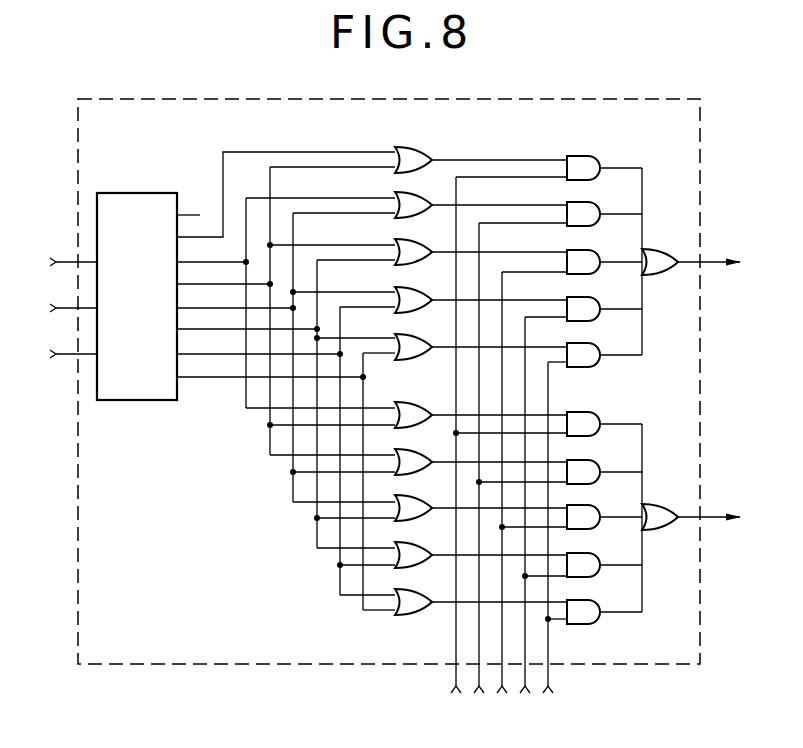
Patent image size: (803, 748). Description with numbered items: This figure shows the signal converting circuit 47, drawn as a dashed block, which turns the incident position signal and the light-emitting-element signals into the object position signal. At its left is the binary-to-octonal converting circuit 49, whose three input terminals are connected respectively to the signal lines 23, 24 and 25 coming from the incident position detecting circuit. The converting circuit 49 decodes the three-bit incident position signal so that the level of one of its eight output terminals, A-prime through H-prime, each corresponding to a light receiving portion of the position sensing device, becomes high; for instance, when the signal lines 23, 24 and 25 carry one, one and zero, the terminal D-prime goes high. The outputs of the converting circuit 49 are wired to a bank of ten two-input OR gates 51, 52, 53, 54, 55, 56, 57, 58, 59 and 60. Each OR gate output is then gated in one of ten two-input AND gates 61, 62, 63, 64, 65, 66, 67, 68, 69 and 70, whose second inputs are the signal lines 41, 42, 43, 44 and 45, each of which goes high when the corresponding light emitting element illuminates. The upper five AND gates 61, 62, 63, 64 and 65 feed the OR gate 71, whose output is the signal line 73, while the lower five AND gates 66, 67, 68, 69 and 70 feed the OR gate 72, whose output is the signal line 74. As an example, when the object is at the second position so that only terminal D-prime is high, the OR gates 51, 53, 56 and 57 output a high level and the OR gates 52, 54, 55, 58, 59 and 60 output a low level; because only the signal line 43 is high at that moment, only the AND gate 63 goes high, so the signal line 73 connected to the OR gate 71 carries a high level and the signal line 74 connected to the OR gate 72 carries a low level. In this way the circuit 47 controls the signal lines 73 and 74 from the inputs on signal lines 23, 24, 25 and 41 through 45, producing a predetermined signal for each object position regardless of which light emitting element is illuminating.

The signal converting circuit 47 is at (641, 99).
The binary-to-octonal converting circuit 49 is at (152, 193).
The signal line 23 is at (60, 355).
The signal line 24 is at (60, 309).
The signal line 25 is at (60, 263).
The signal line 41 is at (506, 451).
The signal line 42 is at (517, 474).
The signal line 43 is at (529, 499).
The signal line 44 is at (540, 521).
The signal line 45 is at (552, 544).
The 2-input OR gate 51 is at (420, 147).
The 2-input OR gate 52 is at (415, 193).
The 2-input OR gate 53 is at (415, 240).
The 2-input OR gate 54 is at (415, 288).
The 2-input OR gate 55 is at (415, 335).
The 2-input OR gate 56 is at (420, 402).
The 2-input OR gate 57 is at (415, 450).
The 2-input OR gate 58 is at (415, 496).
The 2-input OR gate 59 is at (415, 543).
The 2-input OR gate 60 is at (415, 590).
The 2-input AND gate 61 is at (593, 156).
The 2-input AND gate 62 is at (586, 202).
The 2-input AND gate 63 is at (586, 250).
The 2-input AND gate 64 is at (586, 297).
The 2-input AND gate 65 is at (586, 343).
The 2-input AND gate 66 is at (592, 412).
The 2-input AND gate 67 is at (587, 460).
The 2-input AND gate 68 is at (587, 505).
The 2-input AND gate 69 is at (587, 553).
The 2-input AND gate 70 is at (587, 600).
The 5-input OR gate 71 is at (656, 249).
The 5-input OR gate 72 is at (656, 504).
The signal line 73 is at (713, 261).
The signal line 74 is at (713, 516).